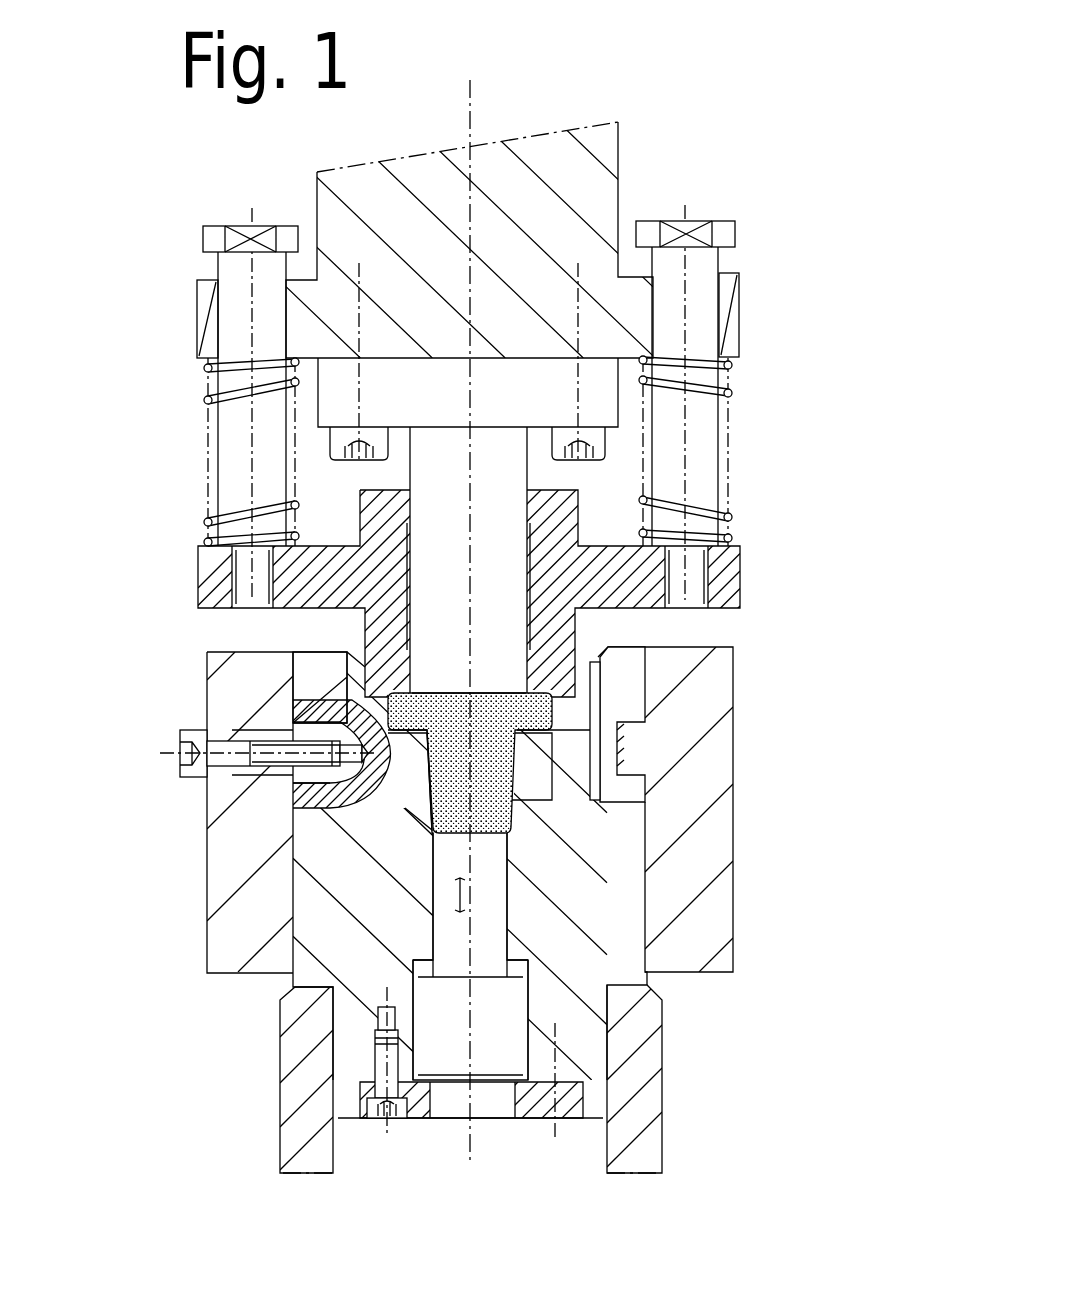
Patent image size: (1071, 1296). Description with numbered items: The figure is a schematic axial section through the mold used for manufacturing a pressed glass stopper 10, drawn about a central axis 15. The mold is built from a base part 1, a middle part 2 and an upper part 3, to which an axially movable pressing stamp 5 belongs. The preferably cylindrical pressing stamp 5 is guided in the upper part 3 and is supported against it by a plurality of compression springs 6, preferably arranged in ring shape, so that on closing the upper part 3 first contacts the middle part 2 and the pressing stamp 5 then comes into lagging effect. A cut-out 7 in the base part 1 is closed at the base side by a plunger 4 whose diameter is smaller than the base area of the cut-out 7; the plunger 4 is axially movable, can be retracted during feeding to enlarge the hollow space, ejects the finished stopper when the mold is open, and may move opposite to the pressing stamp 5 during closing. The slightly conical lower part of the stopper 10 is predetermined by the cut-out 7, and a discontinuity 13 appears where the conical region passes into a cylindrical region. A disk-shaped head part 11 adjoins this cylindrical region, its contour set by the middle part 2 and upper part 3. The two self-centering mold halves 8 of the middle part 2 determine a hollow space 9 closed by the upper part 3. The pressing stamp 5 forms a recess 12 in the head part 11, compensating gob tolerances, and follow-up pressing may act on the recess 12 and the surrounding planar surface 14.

The base part 1 is at (586, 900).
The middle part 2 is at (674, 694).
The upper part 3 is at (604, 517).
The plunger 4 is at (490, 929).
The pressing stamp 5 is at (510, 479).
The compression springs 6 is at (735, 392).
The cut-out 7 is at (405, 826).
The mold halves 8 is at (578, 733).
The hollow space 9 is at (362, 721).
The pressed glass stopper 10 is at (647, 867).
The head part 11 is at (362, 717).
The recess 12 is at (468, 694).
The discontinuity 13 is at (545, 747).
The planar surface 14 is at (538, 664).
The press axis 15 is at (473, 101).